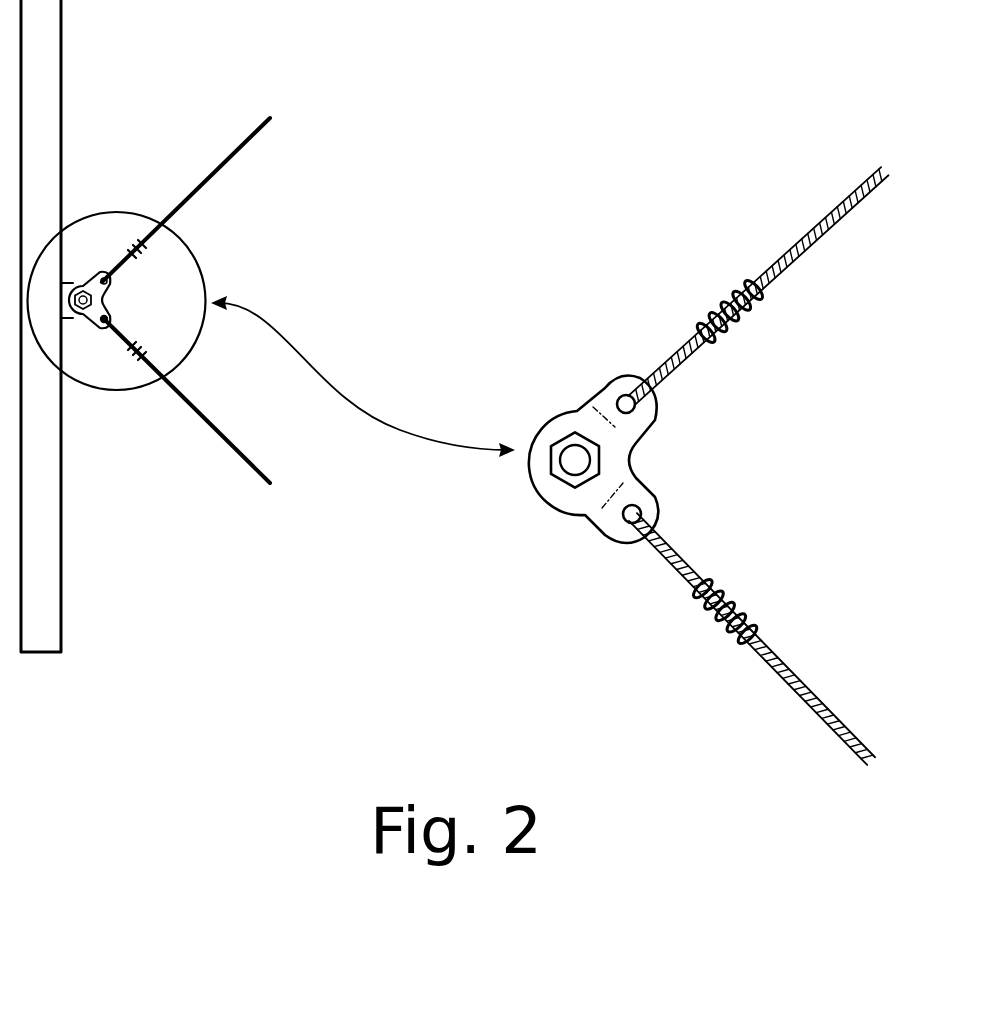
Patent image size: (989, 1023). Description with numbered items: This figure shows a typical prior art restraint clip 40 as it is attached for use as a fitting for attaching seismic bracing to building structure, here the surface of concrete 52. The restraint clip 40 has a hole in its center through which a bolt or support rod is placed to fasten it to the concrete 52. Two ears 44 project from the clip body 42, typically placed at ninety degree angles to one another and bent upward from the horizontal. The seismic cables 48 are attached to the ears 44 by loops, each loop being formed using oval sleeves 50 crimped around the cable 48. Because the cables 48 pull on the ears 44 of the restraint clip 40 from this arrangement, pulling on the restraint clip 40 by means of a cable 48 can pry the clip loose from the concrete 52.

The restraint clip 40 is at (641, 430).
The clamp body 42 is at (648, 492).
The ears 44 is at (605, 385).
The seismic cables 48 is at (810, 222).
The oval sleeves 50 is at (740, 323).
The concrete 52 is at (62, 113).